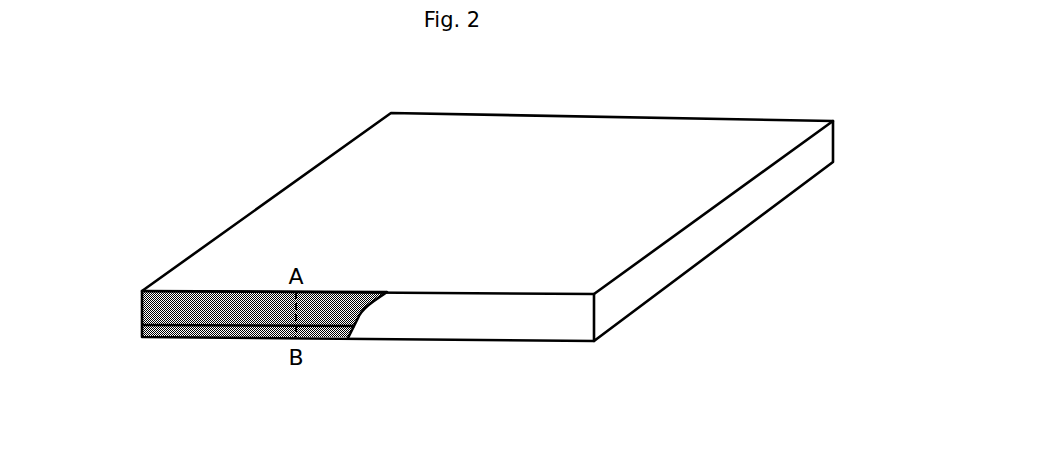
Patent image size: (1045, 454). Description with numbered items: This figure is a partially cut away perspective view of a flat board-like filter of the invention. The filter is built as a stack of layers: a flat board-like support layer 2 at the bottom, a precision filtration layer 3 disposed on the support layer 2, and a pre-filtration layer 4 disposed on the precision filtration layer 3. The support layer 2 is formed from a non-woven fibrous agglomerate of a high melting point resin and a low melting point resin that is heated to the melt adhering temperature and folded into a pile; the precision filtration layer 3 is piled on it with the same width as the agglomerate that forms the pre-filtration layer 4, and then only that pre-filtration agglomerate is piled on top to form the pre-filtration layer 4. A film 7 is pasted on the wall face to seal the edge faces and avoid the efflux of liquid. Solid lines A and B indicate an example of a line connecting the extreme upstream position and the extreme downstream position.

The support layer 2 is at (160, 329).
The precision filtration layer 3 is at (178, 326).
The pre-filtration layer 4 is at (340, 310).
The film 7 is at (558, 320).